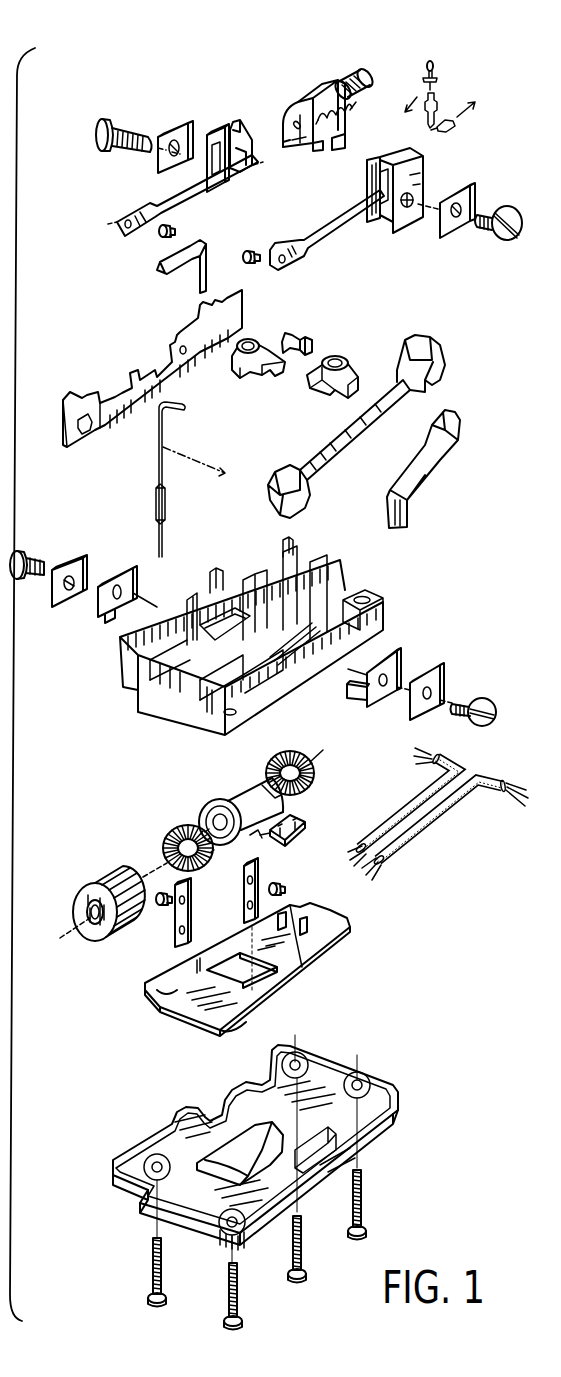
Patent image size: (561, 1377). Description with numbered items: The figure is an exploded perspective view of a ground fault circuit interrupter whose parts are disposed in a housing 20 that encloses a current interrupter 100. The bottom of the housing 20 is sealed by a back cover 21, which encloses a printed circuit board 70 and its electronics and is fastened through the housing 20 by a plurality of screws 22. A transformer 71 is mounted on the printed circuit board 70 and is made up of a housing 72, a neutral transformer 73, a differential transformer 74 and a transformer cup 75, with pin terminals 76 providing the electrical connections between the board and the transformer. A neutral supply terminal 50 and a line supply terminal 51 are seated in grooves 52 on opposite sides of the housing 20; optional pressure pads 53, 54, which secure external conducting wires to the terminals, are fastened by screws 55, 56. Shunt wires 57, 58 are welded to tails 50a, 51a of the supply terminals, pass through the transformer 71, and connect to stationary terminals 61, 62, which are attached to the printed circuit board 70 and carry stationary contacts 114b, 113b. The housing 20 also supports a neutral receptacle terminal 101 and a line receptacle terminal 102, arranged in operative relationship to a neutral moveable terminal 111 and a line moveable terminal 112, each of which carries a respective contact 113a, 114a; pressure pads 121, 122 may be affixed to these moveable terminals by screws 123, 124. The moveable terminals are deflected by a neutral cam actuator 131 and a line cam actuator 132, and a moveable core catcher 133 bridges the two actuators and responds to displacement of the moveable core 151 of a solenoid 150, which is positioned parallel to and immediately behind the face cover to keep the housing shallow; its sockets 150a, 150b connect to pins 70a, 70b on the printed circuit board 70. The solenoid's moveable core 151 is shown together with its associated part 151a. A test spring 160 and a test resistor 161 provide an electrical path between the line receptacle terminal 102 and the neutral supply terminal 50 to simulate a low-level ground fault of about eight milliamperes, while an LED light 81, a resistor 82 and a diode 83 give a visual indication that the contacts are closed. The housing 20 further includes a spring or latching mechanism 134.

The housing 20 is at (385, 609).
The back cover 21 is at (388, 1086).
The screws 22 is at (226, 1302).
The neutral supply terminal 50 is at (396, 657).
The tail 50a is at (358, 701).
The line supply terminal 51 is at (117, 576).
The tail 51a is at (103, 613).
The grooves 52 is at (333, 648).
The pressure pad 53 is at (62, 608).
The pressure pad 54 is at (441, 680).
The screw 55 is at (30, 561).
The screw 56 is at (478, 700).
The shunt wire 57 is at (432, 822).
The shunt wire 58 is at (410, 800).
The stationary terminal 61 is at (174, 941).
The stationary terminal 62 is at (243, 901).
The printed circuit board 70 is at (346, 925).
The pin 70a is at (302, 967).
The pin 70b is at (307, 933).
The transformer 71 is at (191, 788).
The housing 72 is at (210, 803).
The neutral transformer 73 is at (306, 796).
The differential transformer 74 is at (164, 846).
The transformer cup 75 is at (80, 893).
The pin terminals 76 is at (290, 838).
The LED light 81 is at (436, 68).
The resistor 82 is at (440, 106).
The diode 83 is at (456, 128).
The current interrupter 100 is at (284, 205).
The neutral receptacle terminal 101 is at (352, 428).
The line receptacle terminal 102 is at (148, 374).
The neutral moveable terminal 111 is at (347, 222).
The line moveable terminal 112 is at (152, 198).
The contact 113a is at (244, 250).
The stationary contact 113b is at (286, 891).
The contact 114a is at (158, 235).
The stationary contact 114b is at (160, 908).
The pressure pad 121 is at (460, 228).
The pressure pad 122 is at (174, 128).
The screw 123 is at (482, 211).
The screw 124 is at (122, 136).
The neutral cam actuator 131 is at (340, 359).
The line cam actuator 132 is at (267, 372).
The moveable core catcher 133 is at (306, 336).
The spring or latching mechanism 134 is at (415, 490).
The solenoid 150 is at (306, 98).
The socket 150a is at (318, 150).
The socket 150b is at (352, 140).
The moveable core 151 is at (368, 74).
The spring 151a is at (345, 78).
The test spring 160 is at (178, 264).
The test resistor 161 is at (157, 469).